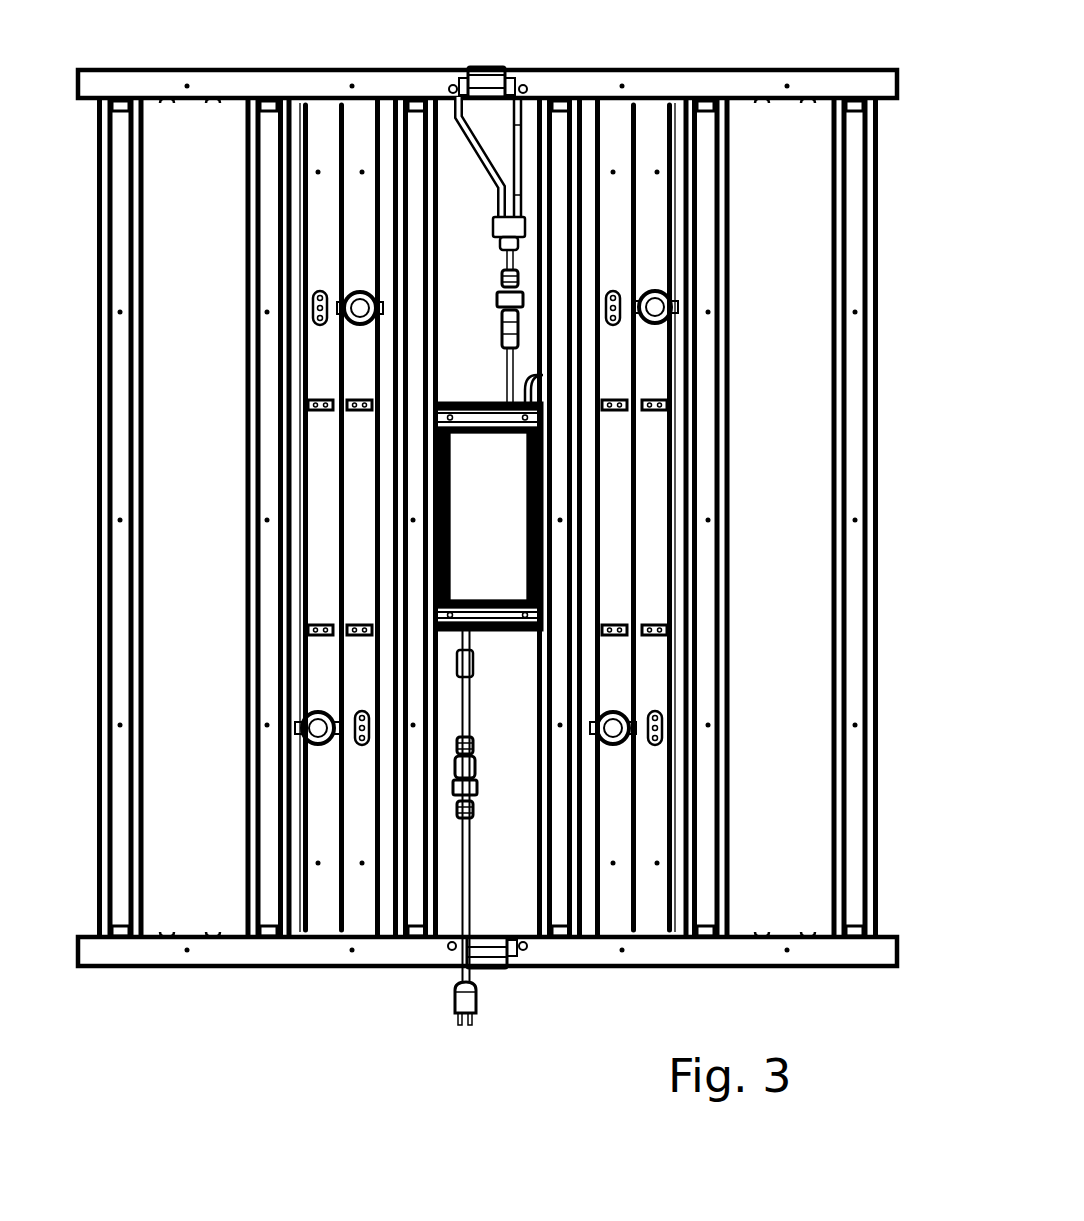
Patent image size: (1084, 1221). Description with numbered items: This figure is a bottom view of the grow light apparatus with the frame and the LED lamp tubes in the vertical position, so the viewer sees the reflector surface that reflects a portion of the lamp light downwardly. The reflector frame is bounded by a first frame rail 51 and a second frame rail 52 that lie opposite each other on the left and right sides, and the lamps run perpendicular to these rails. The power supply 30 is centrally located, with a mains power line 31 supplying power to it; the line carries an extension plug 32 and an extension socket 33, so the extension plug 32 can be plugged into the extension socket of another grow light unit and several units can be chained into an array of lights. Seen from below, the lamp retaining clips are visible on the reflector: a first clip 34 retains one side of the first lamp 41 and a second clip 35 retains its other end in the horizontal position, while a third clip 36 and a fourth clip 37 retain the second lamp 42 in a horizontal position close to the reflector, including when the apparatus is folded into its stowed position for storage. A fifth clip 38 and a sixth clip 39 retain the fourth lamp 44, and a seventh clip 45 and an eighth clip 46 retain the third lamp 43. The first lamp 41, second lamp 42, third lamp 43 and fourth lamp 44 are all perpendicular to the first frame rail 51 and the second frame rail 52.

The power supply 30 is at (504, 534).
The mains power line 31 is at (520, 392).
The extension plug 32 is at (445, 998).
The extension socket 33 is at (483, 62).
The first clip 34 is at (655, 400).
The second clip 35 is at (655, 625).
The third clip 36 is at (607, 620).
The fourth clip 37 is at (607, 400).
The fifth clip 38 is at (312, 630).
The sixth clip 39 is at (310, 405).
The first lamp 41 is at (672, 305).
The second lamp 42 is at (633, 748).
The third lamp 43 is at (345, 300).
The fourth lamp 44 is at (308, 742).
The seventh clip 45 is at (365, 392).
The eighth clip 46 is at (362, 618).
The first frame rail 51 is at (882, 970).
The second frame rail 52 is at (878, 68).